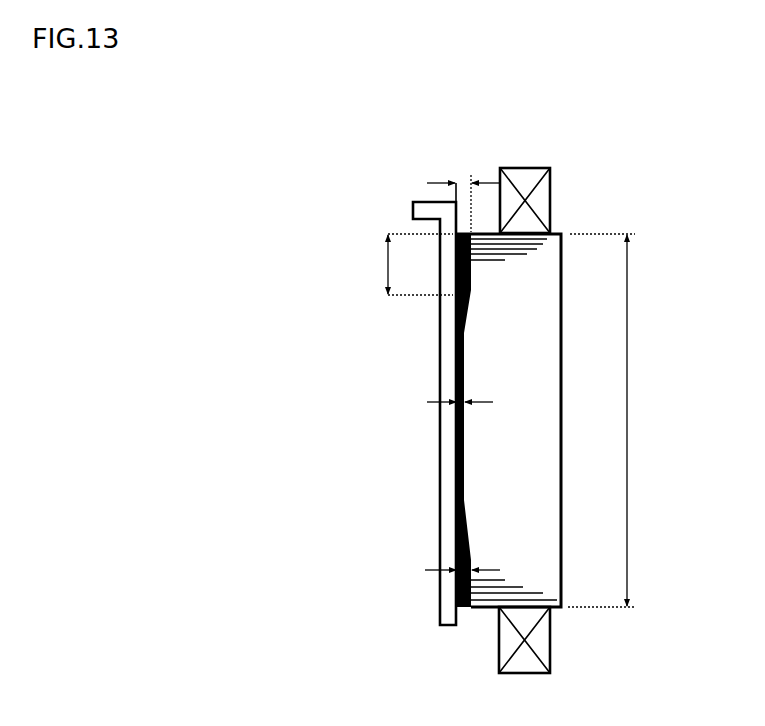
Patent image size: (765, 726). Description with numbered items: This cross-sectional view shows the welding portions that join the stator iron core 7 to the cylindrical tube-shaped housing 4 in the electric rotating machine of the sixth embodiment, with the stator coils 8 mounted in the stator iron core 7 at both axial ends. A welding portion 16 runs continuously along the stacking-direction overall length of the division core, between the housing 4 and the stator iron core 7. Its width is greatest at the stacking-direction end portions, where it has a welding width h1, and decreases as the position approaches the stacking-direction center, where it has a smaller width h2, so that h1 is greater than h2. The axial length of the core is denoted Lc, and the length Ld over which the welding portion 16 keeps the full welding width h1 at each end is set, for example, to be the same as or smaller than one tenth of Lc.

The housing 4 is at (450, 617).
The stator iron core 7 is at (550, 256).
The stator coils 8 is at (543, 622).
The welding portion 16 is at (462, 436).
The welding width at both end portions h1 is at (462, 182).
The welding width at central part h2 is at (427, 400).
The length of the welding portion at end portion Ld is at (387, 270).
The axial length Lc is at (628, 480).